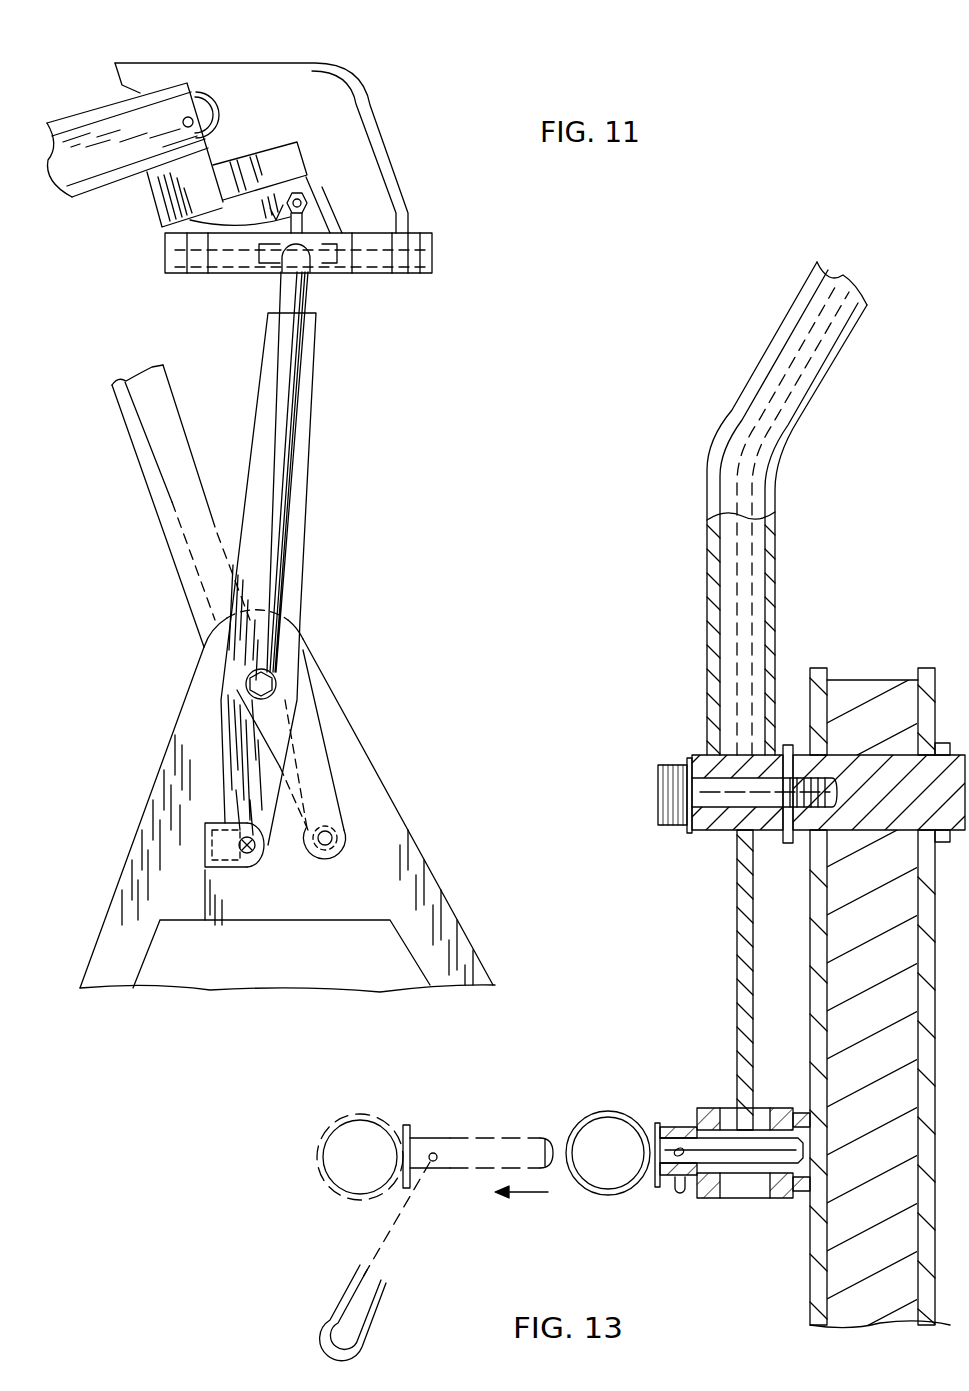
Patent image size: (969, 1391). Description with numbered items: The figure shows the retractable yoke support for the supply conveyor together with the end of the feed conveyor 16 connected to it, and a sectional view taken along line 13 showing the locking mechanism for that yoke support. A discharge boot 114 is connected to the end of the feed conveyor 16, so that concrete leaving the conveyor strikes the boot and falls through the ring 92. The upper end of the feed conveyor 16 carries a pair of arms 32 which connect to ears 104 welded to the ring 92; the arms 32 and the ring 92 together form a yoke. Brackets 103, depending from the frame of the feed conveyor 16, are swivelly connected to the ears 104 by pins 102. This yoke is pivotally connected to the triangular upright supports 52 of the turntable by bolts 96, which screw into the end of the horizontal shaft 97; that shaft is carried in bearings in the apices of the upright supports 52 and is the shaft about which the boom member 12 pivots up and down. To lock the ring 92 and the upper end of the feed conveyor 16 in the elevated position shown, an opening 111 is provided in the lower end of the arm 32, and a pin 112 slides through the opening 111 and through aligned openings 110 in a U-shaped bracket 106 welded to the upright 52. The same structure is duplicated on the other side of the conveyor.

In FIG. 11, the feed conveyor 16 is at (88, 112).
In FIG. 11, the discharge boot 114 is at (298, 78).
In FIG. 11, the boom member 12 is at (287, 172).
In FIG. 11, the pins 102 is at (307, 196).
In FIG. 11, the ears 104 is at (312, 221).
In FIG. 11, the ring 92 is at (433, 257).
In FIG. 11, the brackets 103 is at (240, 212).
In FIG. 11, the arms 32 is at (305, 453).
In FIG. 13, the arms 32 is at (737, 935).
In FIG. 11, the section line 13 is at (273, 500).
In FIG. 11, the bolts 96 is at (273, 684).
In FIG. 13, the bolts 96 is at (660, 802).
In FIG. 11, the triangular upright supports 52 is at (378, 825).
In FIG. 13, the triangular upright supports 52 is at (838, 977).
In FIG. 11, the opening 111 is at (338, 834).
In FIG. 13, the opening 111 is at (777, 1113).
In FIG. 11, the U-shaped bracket 106 is at (227, 873).
In FIG. 13, the U-shaped bracket 106 is at (787, 1200).
In FIG. 11, the pin 112 is at (258, 847).
In FIG. 13, the pin 112 is at (732, 1162).
In FIG. 13, the horizontal shaft 97 is at (871, 775).
In FIG. 13, the aligned openings 110 is at (678, 1126).